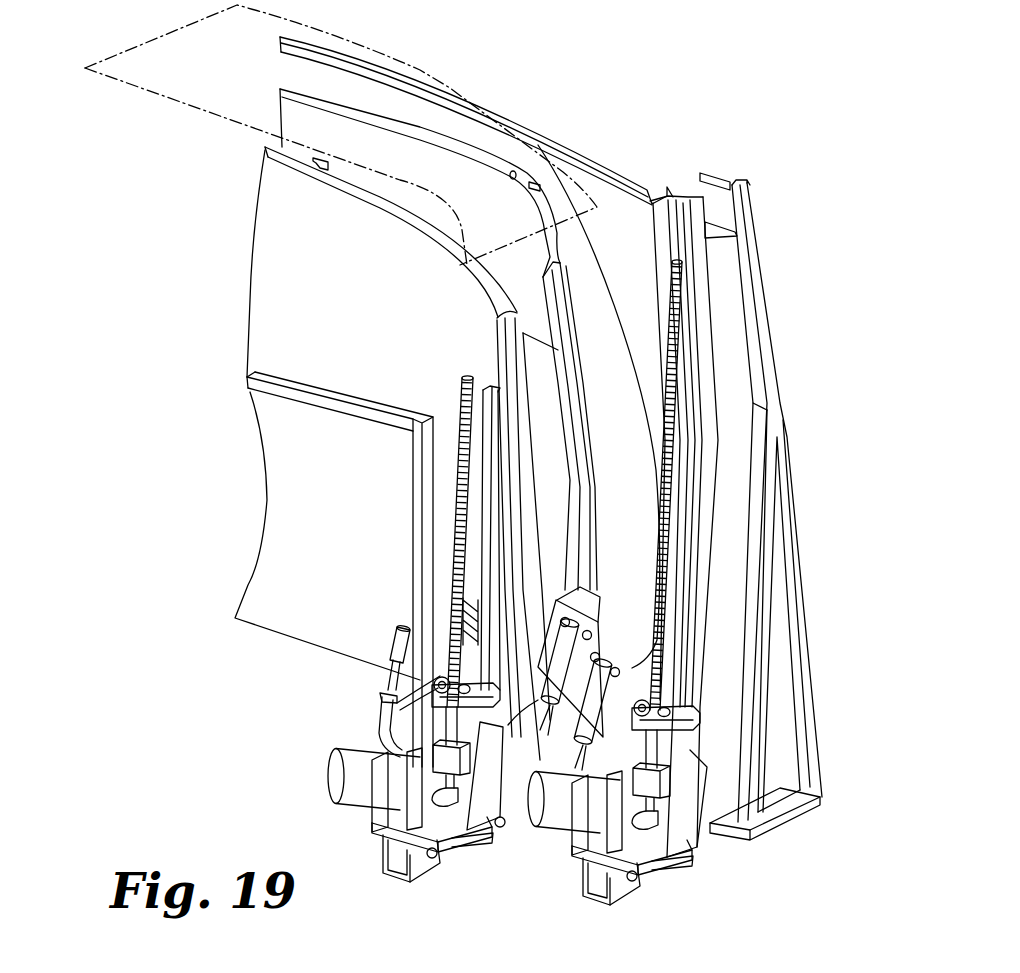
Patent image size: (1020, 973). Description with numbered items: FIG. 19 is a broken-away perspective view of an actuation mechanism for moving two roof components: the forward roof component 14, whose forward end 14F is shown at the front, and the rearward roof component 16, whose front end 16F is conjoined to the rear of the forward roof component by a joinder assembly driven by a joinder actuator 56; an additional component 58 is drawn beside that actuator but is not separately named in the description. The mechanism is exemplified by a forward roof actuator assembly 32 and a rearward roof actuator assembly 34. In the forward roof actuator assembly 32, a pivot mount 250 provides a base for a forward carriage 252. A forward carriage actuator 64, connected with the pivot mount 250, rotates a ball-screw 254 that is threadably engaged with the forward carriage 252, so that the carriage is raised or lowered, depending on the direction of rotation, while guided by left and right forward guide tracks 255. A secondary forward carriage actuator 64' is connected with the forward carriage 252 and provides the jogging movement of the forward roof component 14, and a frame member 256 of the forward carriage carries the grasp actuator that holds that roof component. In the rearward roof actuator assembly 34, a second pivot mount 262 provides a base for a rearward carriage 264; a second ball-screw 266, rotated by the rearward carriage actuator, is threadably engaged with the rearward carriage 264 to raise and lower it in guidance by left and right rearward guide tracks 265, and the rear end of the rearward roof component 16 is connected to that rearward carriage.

The forward roof component 14 is at (250, 233).
The forward end of the forward roof component 14F is at (383, 178).
The rearward roof component 16 is at (281, 118).
The front end of the rearward roof component 16F is at (497, 160).
The forward roof actuator assembly 32 is at (443, 880).
The rearward roof actuator assembly 34 is at (570, 883).
The joinder actuator 56 is at (630, 640).
The electrical connector 58 is at (603, 613).
The forward carriage actuator 64 is at (336, 783).
The secondary forward carriage actuator 64' is at (376, 636).
The pivot mount 250 is at (380, 878).
The forward carriage 252 is at (372, 678).
The ball-screw 254 is at (460, 398).
The left and right forward guide tracks 255 is at (493, 455).
The frame member 256 is at (477, 590).
The second pivot mount 262 is at (632, 907).
The rearward carriage 264 is at (713, 742).
The left and right rearward guide tracks 265 is at (660, 437).
The second ball-screw 266 is at (670, 320).